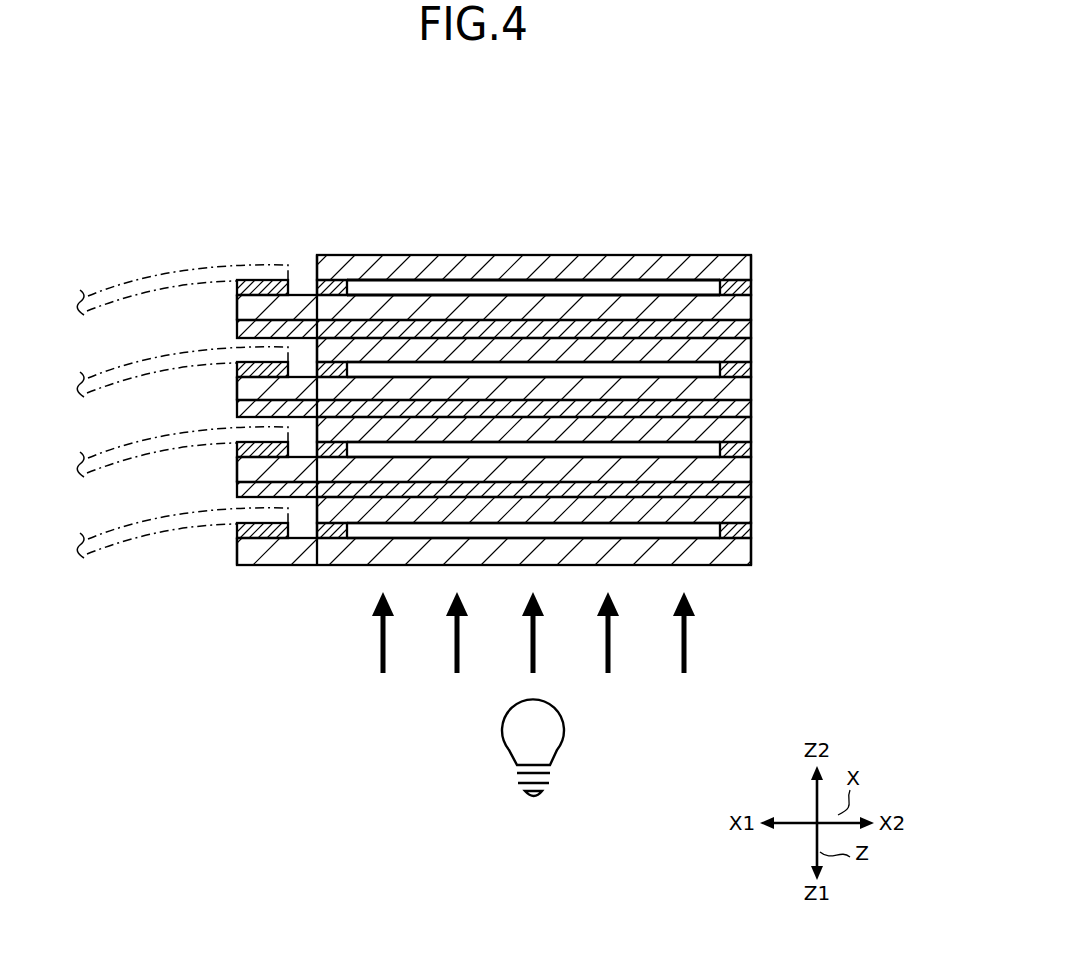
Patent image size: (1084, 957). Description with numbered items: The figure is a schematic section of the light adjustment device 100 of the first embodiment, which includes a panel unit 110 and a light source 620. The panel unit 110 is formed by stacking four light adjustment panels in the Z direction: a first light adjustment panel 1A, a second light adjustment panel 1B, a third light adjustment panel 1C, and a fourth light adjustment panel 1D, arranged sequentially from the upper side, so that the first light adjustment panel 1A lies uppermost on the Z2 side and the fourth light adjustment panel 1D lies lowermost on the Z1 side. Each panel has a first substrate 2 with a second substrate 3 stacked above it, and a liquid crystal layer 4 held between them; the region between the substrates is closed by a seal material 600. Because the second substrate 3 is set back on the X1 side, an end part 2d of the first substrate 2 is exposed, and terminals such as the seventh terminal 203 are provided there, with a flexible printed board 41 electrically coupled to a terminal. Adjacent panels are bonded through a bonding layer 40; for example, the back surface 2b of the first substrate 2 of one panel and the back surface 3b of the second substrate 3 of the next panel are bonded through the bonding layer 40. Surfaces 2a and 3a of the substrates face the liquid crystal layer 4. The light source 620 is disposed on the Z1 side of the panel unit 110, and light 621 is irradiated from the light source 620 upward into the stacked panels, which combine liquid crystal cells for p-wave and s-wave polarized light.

The light adjustment device 100 is at (765, 176).
The panel unit 110 is at (896, 270).
The first light adjustment panel 1A is at (842, 260).
The second light adjustment panel 1B is at (842, 340).
The third light adjustment panel 1C is at (842, 420).
The fourth light adjustment panel 1D is at (842, 502).
The first substrate 2 is at (745, 307).
The first surface of layer 2 2a is at (455, 295).
The back surface of the first substrate 2b is at (418, 340).
The end part of the first substrate 2d is at (262, 309).
The second substrate 3 is at (745, 268).
The surface of layer 3 3a is at (516, 283).
The back surface of the second substrate 3b is at (548, 255).
The liquid crystal layer 4 is at (380, 288).
The bonding layer 40 is at (745, 328).
The flexible printed board 41 is at (108, 289).
The seventh terminal 203 is at (237, 285).
The seal material 600 is at (317, 256).
The light source 620 is at (565, 733).
The light 621 is at (690, 641).